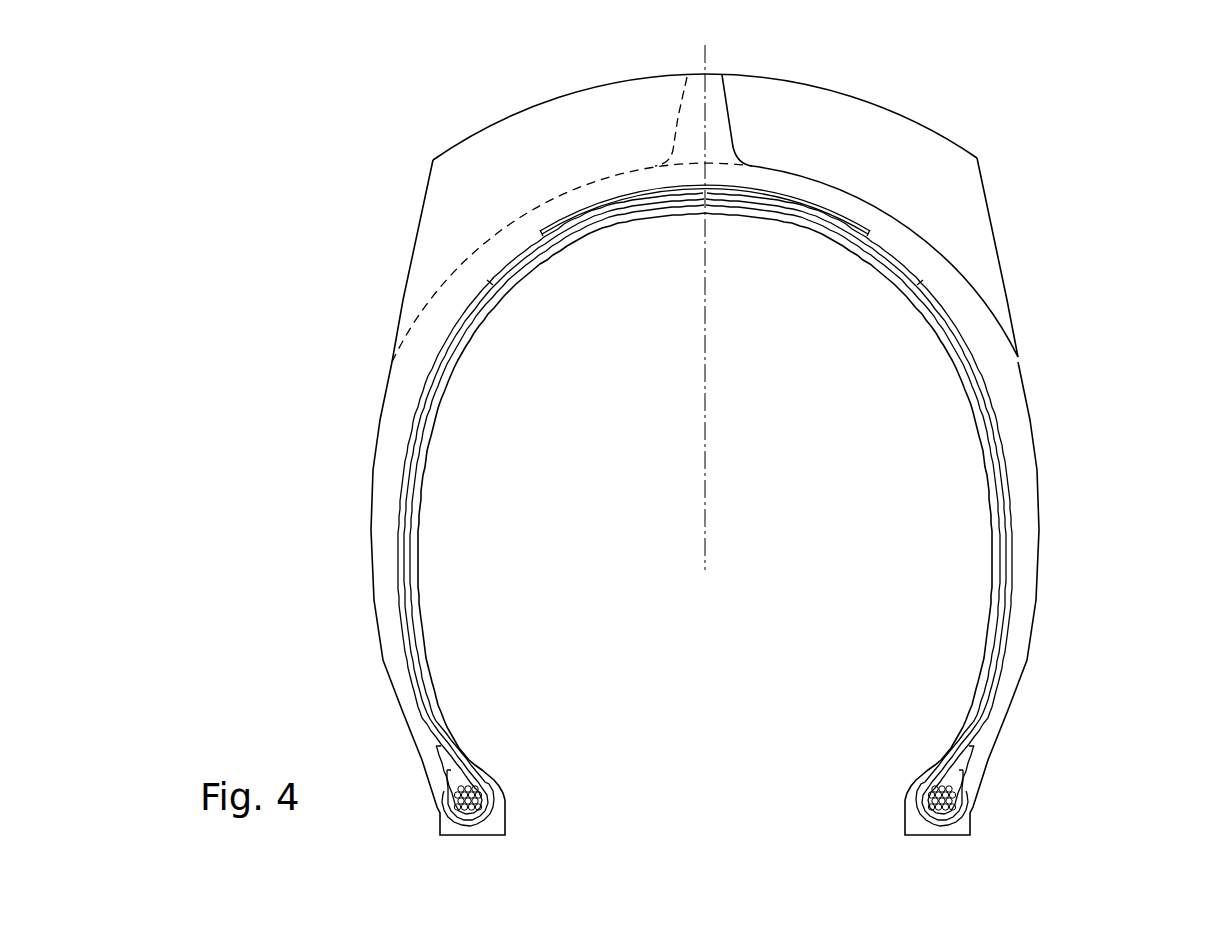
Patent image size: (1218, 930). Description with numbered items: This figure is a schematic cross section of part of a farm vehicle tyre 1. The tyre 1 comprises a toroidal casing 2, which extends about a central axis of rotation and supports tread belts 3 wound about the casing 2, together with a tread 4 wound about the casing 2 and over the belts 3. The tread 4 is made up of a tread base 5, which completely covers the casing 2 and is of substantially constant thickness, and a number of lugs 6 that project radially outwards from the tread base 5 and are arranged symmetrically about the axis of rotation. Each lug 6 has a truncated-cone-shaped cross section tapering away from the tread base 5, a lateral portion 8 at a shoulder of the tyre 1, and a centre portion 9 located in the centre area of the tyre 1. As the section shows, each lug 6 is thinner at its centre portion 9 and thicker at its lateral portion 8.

The farm vehicle tyre 1 is at (1117, 125).
The toroidal casing 2 is at (462, 522).
The tread belts 3 is at (638, 198).
The tread 4 is at (316, 322).
The tread base 5 is at (948, 278).
The lug 6 is at (471, 111).
The lateral portion 8 is at (455, 186).
The centre portion 9 is at (693, 118).